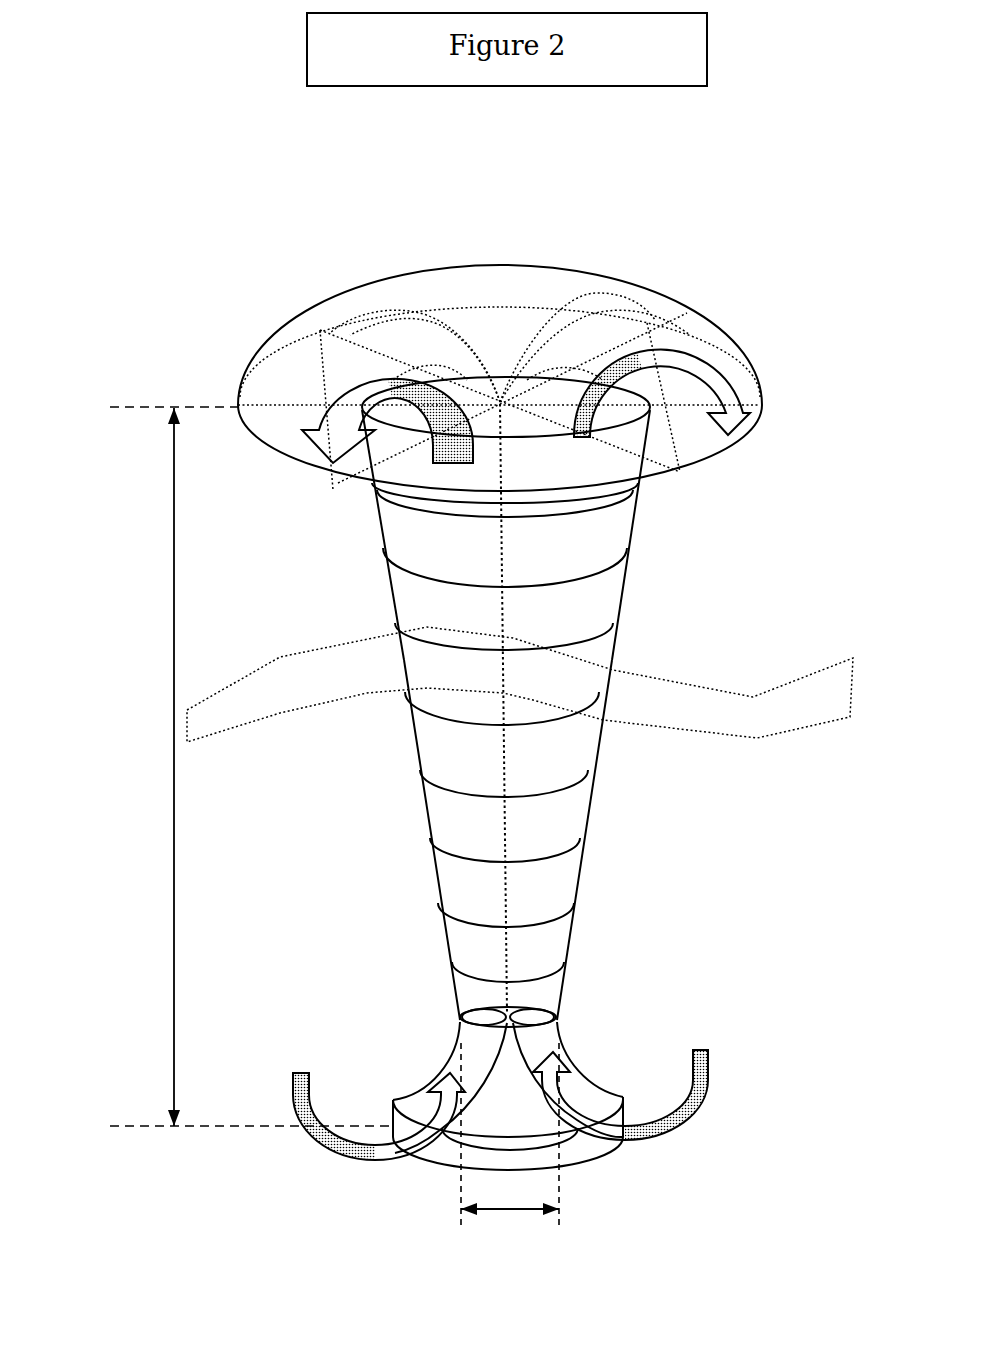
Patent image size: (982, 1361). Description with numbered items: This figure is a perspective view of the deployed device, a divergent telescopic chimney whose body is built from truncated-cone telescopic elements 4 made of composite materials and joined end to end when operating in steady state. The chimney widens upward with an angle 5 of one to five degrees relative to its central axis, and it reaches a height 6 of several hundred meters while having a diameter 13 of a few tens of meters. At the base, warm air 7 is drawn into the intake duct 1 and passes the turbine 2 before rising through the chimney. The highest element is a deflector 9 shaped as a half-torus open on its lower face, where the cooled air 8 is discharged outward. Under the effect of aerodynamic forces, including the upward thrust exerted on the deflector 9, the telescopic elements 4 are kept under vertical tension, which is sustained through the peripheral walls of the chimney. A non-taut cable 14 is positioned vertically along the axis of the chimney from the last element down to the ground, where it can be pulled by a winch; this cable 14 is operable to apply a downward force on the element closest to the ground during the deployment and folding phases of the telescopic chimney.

The intake duct 1 is at (585, 1143).
The turbine 2 is at (557, 1005).
The telescopic element 4 is at (617, 620).
The angle 5 is at (427, 817).
The height 6 is at (174, 668).
The warm air 7 is at (698, 1092).
The cooled air 8 is at (737, 427).
The deflector 9 is at (675, 298).
The diameter 13 is at (518, 1212).
The cable of traction 14 is at (508, 825).